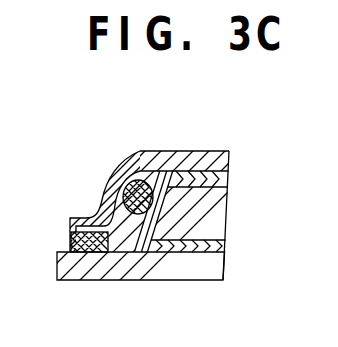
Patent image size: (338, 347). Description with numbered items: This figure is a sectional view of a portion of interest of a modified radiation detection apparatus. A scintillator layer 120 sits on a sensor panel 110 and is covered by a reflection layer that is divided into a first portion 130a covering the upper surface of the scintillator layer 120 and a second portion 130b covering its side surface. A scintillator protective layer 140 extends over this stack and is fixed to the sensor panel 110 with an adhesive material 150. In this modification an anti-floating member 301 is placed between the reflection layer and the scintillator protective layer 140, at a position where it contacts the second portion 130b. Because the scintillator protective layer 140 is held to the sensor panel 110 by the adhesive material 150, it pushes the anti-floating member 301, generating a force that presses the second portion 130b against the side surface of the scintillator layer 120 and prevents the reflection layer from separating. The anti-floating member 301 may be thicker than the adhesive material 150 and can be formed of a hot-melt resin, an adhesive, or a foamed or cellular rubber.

The sensor panel 110 is at (240, 238).
The scintillator layer 120 is at (228, 212).
The first portion of the reflection layer 130a is at (226, 182).
The second portion of the reflection layer 130b is at (152, 254).
The scintillator protective layer 140 is at (152, 205).
The adhesive material 150 is at (73, 280).
The anti-floating member 301 is at (134, 152).